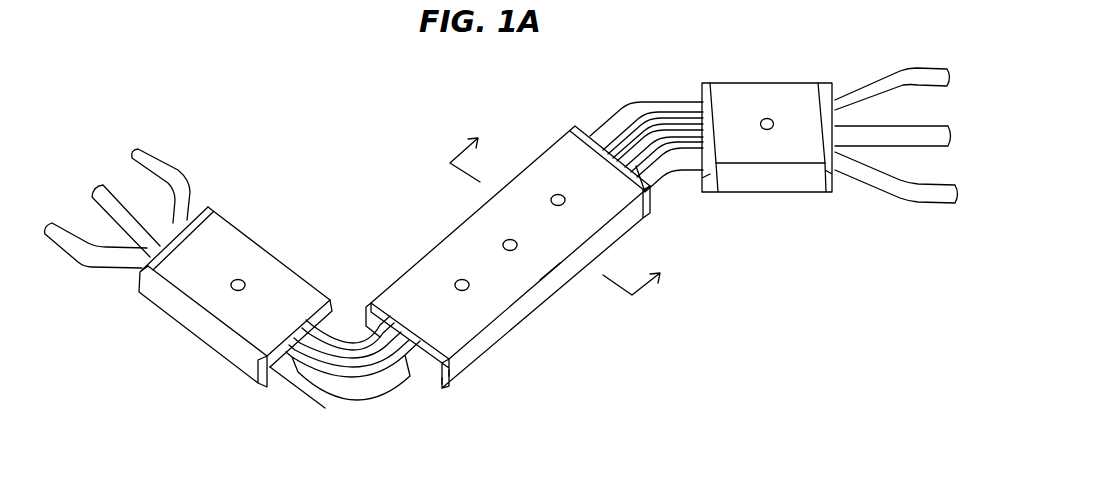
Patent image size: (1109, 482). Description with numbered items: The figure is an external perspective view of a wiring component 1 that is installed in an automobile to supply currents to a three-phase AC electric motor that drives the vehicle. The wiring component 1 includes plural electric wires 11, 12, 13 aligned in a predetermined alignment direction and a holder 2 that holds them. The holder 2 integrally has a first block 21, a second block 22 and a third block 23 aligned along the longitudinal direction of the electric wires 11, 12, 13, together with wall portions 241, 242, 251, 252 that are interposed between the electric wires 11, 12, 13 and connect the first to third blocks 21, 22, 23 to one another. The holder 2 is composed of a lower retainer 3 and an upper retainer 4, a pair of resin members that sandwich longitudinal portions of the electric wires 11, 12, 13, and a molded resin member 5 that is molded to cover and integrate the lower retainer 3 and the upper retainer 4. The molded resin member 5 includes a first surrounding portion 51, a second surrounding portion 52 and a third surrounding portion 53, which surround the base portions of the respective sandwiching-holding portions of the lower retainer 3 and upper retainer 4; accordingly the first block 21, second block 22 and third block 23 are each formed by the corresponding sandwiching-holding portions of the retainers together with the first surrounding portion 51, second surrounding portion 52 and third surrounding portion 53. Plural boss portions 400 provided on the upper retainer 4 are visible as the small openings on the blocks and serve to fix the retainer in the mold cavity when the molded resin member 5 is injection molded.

The wiring component 1 is at (321, 124).
The first electric wire 11 is at (63, 230).
The second electric wire 12 is at (102, 187).
The third electric wire 13 is at (150, 158).
The first block 21 is at (323, 261).
The second block 22 is at (443, 213).
The third block 23 is at (757, 63).
The holder 2 is at (548, 365).
The lower retainer 3 is at (458, 386).
The upper retainer 4 is at (458, 372).
The molded resin member 5 is at (486, 356).
The first surrounding portion 51 is at (223, 230).
The second surrounding portion 52 is at (427, 263).
The third surrounding portion 53 is at (780, 88).
The wall portion 241 is at (358, 393).
The wall portion 242 is at (330, 380).
The wall portion 251 is at (633, 115).
The wall portion 252 is at (677, 115).
The boss portion 400 is at (243, 279).